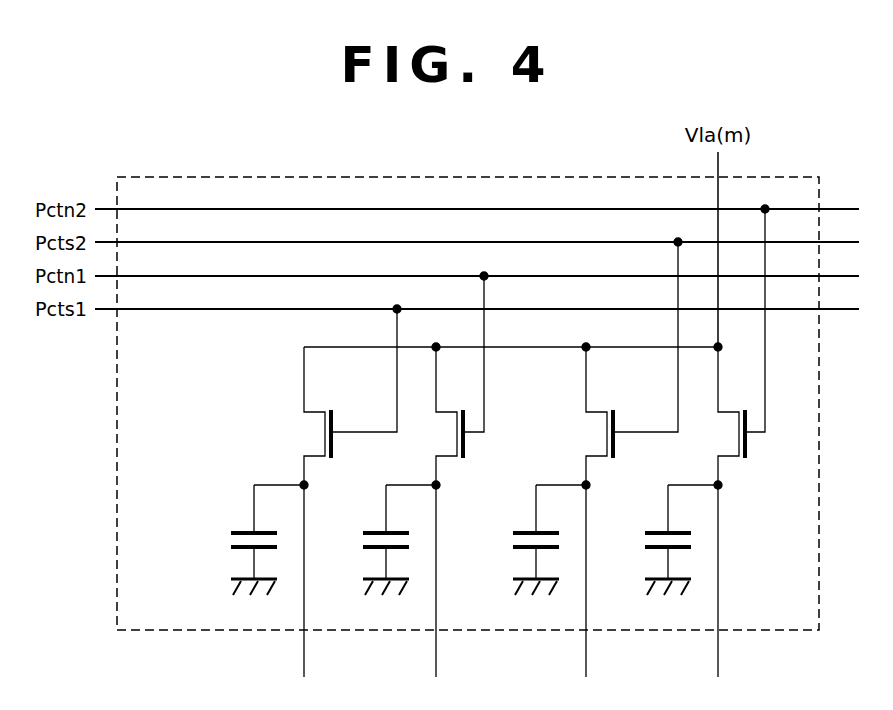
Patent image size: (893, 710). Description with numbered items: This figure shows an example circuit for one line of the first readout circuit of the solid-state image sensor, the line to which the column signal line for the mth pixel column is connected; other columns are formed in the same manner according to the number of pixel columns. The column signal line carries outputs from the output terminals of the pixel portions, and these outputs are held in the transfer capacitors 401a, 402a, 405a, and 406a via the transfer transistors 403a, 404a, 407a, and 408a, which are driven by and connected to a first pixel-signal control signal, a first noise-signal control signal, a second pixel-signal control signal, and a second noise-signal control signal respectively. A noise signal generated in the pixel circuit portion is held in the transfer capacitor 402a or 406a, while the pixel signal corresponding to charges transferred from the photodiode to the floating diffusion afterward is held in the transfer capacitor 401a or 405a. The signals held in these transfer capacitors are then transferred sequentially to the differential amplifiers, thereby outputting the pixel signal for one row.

The transfer capacitor 401a is at (231, 539).
The transfer capacitor 402a is at (384, 530).
The transfer transistor 403a is at (308, 434).
The transfer transistor 404a is at (440, 437).
The transfer capacitor 405a is at (534, 530).
The transfer capacitor 406a is at (666, 530).
The transfer transistor 407a is at (589, 434).
The transfer transistor 408a is at (720, 437).